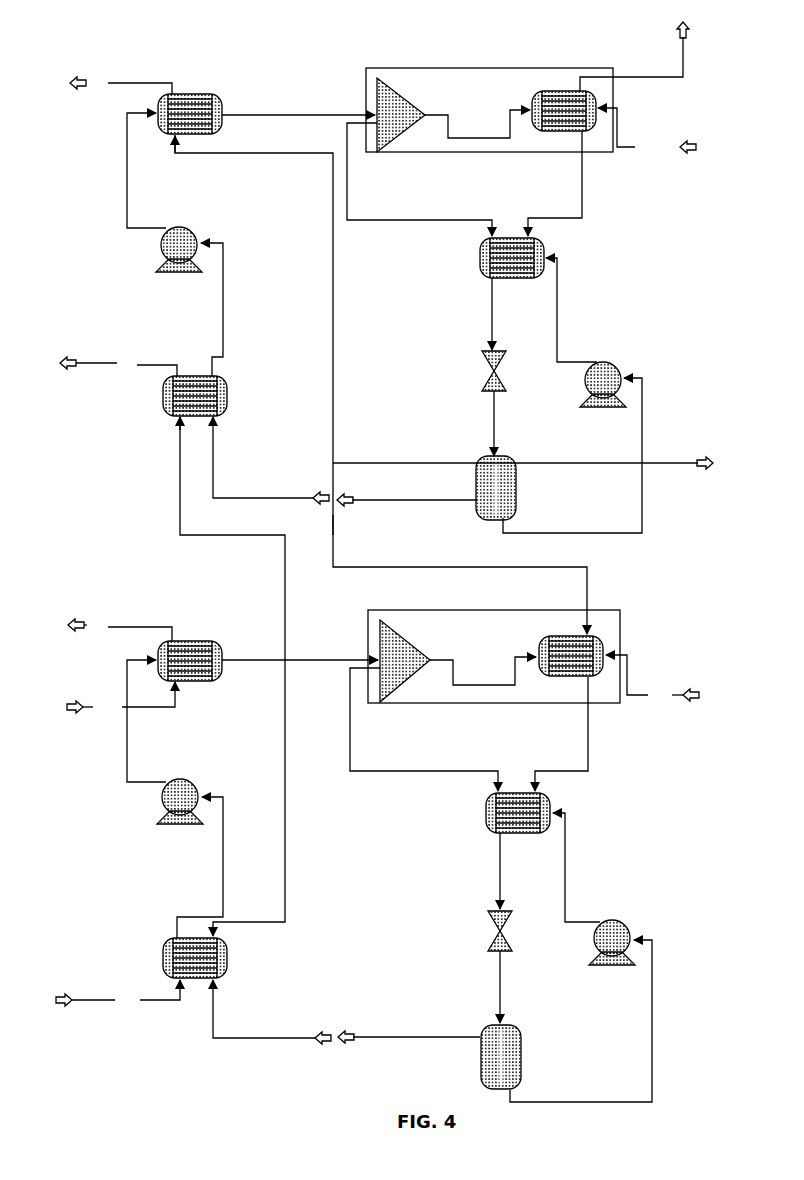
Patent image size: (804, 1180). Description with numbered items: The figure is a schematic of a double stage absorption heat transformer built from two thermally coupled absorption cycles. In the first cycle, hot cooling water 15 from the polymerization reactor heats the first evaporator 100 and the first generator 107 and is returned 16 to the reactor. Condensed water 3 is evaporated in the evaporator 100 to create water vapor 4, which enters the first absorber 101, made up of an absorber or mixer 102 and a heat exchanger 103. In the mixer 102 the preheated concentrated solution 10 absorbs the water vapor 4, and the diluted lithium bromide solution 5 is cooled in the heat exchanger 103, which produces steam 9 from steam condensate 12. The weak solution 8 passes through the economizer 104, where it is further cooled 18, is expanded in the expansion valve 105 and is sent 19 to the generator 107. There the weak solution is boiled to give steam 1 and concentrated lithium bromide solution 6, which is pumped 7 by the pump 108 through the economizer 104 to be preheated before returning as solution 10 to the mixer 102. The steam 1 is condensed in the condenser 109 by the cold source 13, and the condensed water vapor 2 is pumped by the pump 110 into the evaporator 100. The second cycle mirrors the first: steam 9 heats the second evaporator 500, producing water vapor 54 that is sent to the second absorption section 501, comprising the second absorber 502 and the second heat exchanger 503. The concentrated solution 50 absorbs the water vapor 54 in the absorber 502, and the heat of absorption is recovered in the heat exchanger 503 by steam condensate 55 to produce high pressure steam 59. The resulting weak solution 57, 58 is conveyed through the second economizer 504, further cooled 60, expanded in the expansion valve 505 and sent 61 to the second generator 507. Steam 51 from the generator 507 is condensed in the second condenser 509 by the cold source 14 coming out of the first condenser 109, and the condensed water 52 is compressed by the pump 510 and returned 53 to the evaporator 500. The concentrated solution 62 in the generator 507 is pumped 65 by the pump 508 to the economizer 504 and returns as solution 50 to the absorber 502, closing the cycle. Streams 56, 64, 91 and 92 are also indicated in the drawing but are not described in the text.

The second evaporator 500 is at (216, 98).
The second absorber 501 is at (490, 68).
The second absorber 502 is at (396, 93).
The second heat exchanger 503 is at (532, 100).
The second economizer 504 is at (482, 270).
The expansion valve 505 is at (488, 368).
The second generator 507 is at (515, 507).
The pump 508 is at (611, 367).
The second condenser 509 is at (226, 390).
The pump 510 is at (164, 250).
The first evaporator 100 is at (217, 643).
The first absorber 101 is at (492, 609).
The absorber 102 is at (398, 636).
The heat exchanger 103 is at (538, 643).
The economizer 104 is at (487, 821).
The expansion valve 105 is at (496, 928).
The first generator 107 is at (523, 1052).
The pump 108 is at (619, 925).
The first condenser 109 is at (230, 951).
The pump 110 is at (164, 802).
The steam 1 is at (346, 1014).
The condensed water vapor 2 is at (207, 867).
The condensed water 3 is at (142, 721).
The water vapor 4 is at (300, 661).
The diluted lithium bromide solution 5 is at (483, 677).
The concentrated lithium bromide solution 6 is at (586, 1021).
The pumped concentrated solution 7 is at (576, 867).
The weak solution 8 is at (561, 734).
The steam 9 is at (430, 545).
The preheated concentrated solution 10 is at (424, 729).
The steam condensate 12 is at (652, 680).
The cold source 13 is at (118, 996).
The cold source 14 is at (240, 676).
The hot cooling water 15 is at (121, 702).
The returned cooling water 16 is at (120, 629).
The further cooled weak solution 18 is at (498, 871).
The weak solution 19 is at (507, 987).
The concentrated solution 50 is at (419, 179).
The steam 51 is at (345, 463).
The condensed water 52 is at (221, 310).
The returned condensed water 53 is at (142, 170).
The water vapor 54 is at (298, 116).
The steam condensate 55 is at (647, 133).
The stream 56 is at (121, 84).
The weak solution 57 is at (477, 130).
The weak solution 58 is at (555, 183).
The high pressure steam 59 is at (634, 57).
The further cooled weak solution 60 is at (492, 314).
The expanded weak solution 61 is at (501, 423).
The concentrated lithium bromide solution 62 is at (577, 455).
The stream 64 is at (118, 367).
The pumped concentrated solution 65 is at (571, 310).
The stream 91 is at (381, 384).
The stream 92 is at (523, 463).